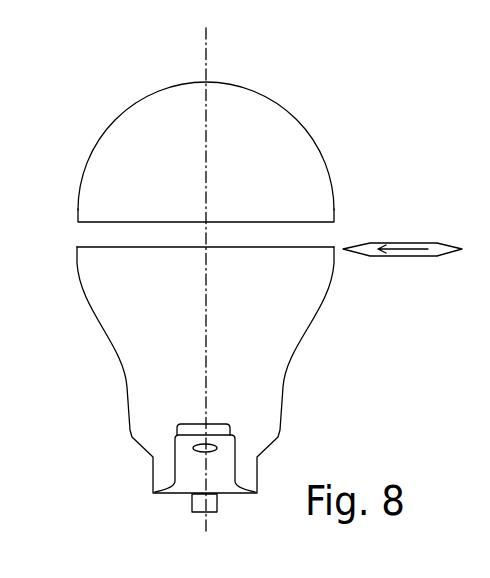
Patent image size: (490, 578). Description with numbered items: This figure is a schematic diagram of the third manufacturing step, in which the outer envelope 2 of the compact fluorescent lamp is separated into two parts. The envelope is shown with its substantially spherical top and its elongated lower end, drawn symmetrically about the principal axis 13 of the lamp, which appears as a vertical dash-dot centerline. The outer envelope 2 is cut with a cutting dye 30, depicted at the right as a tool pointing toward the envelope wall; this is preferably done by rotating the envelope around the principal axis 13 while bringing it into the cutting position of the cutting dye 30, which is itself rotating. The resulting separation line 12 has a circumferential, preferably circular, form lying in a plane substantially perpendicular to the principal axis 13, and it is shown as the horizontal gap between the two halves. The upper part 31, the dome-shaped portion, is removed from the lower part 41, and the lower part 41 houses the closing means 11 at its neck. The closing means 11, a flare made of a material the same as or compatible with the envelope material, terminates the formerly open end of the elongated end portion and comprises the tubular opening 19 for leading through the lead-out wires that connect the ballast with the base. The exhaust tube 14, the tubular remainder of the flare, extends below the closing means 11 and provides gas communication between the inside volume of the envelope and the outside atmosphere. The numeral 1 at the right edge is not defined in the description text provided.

The lamp 1 is at (484, 337).
The outer envelope 2 is at (184, 92).
The closing means 11 is at (227, 463).
The separation line 12 is at (88, 246).
The principal axis 13 is at (207, 60).
The exhaust tube 14 is at (192, 506).
The tubular opening 19 is at (202, 443).
The cutting dye 30 is at (393, 235).
The upper part 31 is at (100, 138).
The lower part 41 is at (123, 385).